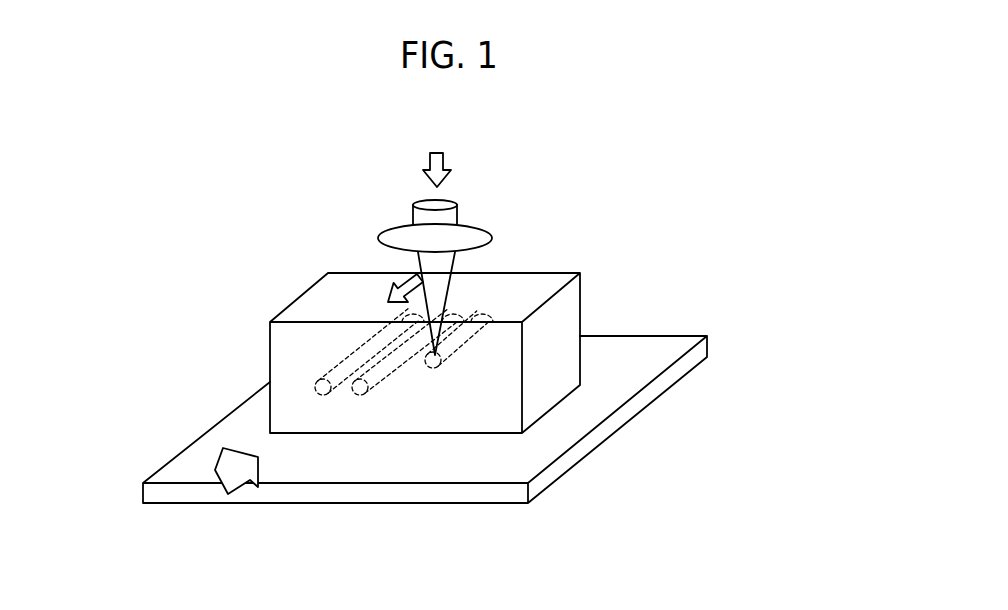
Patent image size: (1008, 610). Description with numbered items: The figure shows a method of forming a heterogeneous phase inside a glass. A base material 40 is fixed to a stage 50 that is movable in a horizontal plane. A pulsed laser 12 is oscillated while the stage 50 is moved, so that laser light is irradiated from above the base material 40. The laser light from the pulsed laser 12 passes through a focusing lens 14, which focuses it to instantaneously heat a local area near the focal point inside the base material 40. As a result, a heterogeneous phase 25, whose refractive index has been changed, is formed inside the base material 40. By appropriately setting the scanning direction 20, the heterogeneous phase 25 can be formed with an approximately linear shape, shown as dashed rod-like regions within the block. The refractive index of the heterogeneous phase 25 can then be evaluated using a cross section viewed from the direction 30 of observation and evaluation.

The pulsed laser 12 is at (441, 241).
The focusing lens 14 is at (478, 236).
The scanning direction 20 is at (416, 276).
The heterogeneous phase 25 is at (343, 360).
The direction of observation and evaluation 30 is at (228, 494).
The base material 40 is at (580, 293).
The stage 50 is at (480, 505).